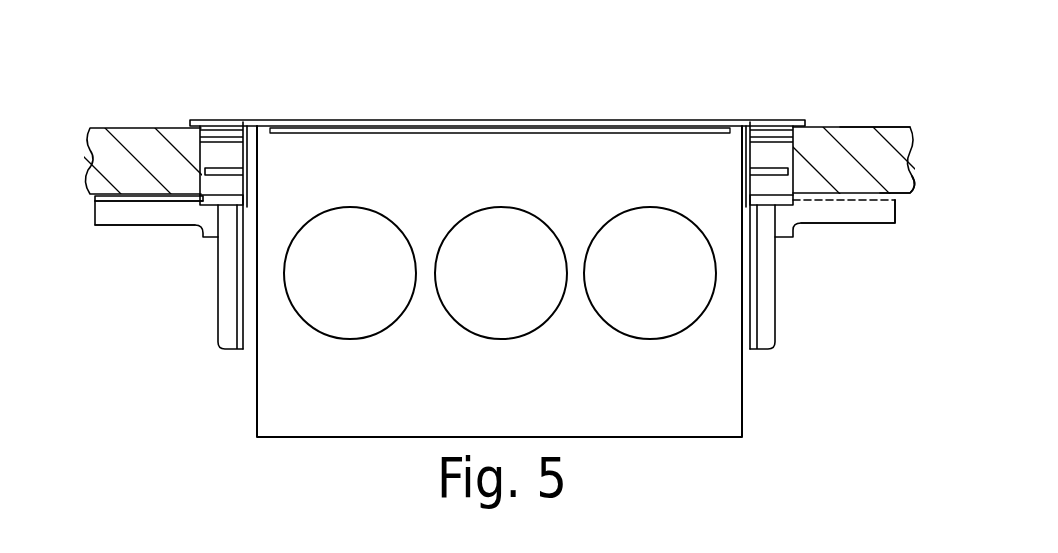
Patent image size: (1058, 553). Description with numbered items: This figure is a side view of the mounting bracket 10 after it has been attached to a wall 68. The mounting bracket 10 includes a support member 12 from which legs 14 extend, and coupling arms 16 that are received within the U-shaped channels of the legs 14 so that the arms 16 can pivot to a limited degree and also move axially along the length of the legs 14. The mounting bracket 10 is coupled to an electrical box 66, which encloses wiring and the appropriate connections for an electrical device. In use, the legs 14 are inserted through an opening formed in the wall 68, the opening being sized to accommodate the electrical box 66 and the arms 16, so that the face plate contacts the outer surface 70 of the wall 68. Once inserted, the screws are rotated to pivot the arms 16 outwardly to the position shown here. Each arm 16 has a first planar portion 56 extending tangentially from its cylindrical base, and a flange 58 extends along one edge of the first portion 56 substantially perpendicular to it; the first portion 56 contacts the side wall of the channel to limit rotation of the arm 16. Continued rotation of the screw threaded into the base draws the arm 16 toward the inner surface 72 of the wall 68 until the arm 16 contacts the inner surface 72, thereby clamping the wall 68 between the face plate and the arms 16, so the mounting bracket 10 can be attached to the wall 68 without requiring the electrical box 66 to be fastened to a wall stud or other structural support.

The mounting bracket 10 is at (550, 110).
The support member 12 is at (770, 118).
The legs 14 is at (222, 353).
The coupling arms 16 is at (143, 227).
The first planar portion 56 is at (113, 213).
The flange 58 is at (165, 202).
The electrical box 66 is at (742, 406).
The wall 68 is at (825, 123).
The outer surface 70 is at (872, 128).
The inner surface 72 is at (915, 197).